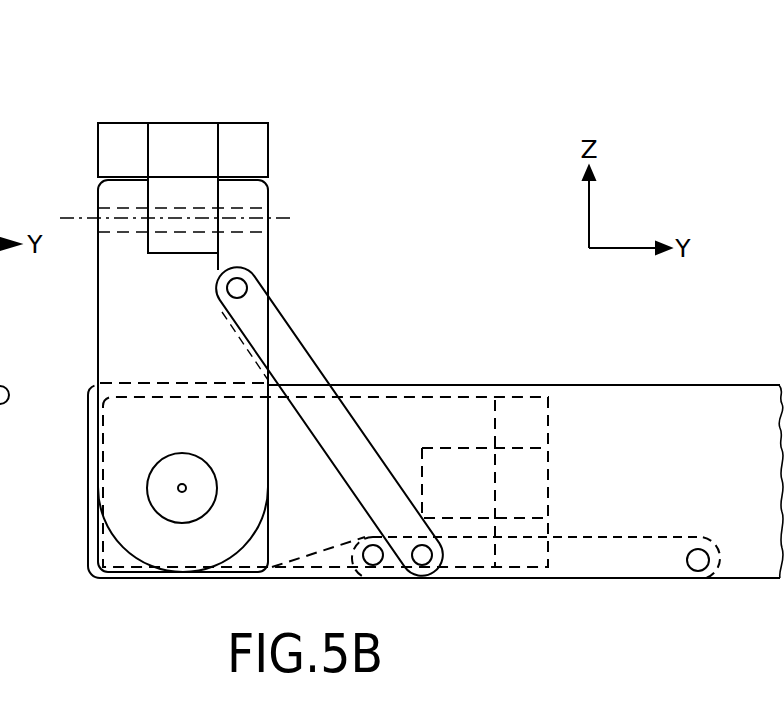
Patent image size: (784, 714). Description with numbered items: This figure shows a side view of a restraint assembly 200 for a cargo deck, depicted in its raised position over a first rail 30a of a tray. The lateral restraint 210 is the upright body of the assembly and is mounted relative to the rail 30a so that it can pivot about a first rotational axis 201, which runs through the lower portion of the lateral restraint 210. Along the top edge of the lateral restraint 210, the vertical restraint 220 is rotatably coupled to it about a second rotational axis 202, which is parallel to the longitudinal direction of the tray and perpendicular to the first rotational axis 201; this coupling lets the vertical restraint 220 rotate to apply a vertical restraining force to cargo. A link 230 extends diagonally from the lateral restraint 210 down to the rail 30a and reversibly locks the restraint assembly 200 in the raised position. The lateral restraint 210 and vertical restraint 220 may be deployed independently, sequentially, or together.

The restraint assembly 200 is at (369, 118).
The vertical restraint 220 is at (182, 148).
The second rotational axis 202 is at (278, 218).
The lateral restraint 210 is at (118, 328).
The link 230 is at (297, 365).
The first rail 30a is at (466, 420).
The first rotational axis 201 is at (182, 492).